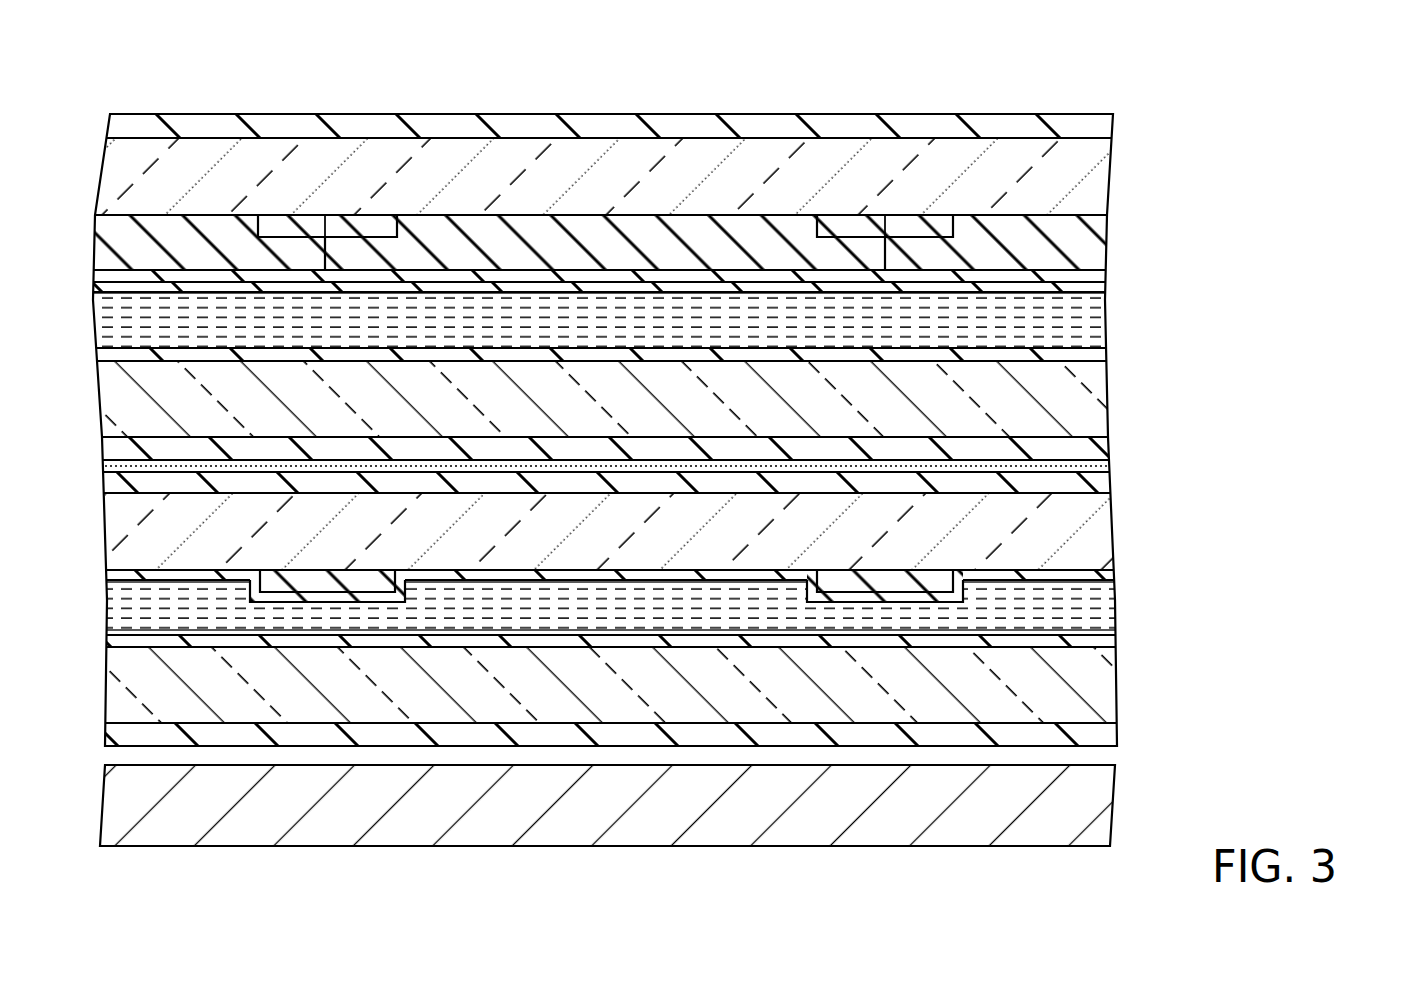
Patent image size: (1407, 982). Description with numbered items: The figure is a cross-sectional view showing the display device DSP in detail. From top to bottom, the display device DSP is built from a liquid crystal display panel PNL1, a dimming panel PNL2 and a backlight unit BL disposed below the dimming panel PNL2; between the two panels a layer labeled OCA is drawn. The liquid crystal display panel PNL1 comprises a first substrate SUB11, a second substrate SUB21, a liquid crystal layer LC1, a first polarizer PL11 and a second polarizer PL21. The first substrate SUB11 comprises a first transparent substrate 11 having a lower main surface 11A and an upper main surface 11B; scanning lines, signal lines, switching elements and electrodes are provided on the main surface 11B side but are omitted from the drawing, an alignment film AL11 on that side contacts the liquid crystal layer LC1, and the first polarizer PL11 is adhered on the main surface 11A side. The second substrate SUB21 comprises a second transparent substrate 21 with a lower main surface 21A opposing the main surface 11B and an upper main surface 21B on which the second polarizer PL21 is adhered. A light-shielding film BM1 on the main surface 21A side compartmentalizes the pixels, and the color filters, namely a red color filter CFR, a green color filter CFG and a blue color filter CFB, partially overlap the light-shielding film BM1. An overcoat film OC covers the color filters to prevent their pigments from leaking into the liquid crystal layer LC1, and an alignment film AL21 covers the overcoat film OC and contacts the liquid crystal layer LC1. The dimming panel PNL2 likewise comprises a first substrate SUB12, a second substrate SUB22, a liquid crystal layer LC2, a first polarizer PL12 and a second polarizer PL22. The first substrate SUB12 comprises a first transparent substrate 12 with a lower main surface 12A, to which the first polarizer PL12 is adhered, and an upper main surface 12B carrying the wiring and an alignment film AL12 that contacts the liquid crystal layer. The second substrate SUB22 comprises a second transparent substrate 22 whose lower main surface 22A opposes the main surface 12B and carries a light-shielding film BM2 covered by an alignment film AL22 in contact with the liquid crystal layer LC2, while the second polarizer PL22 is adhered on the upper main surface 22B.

The display device DSP is at (742, 461).
The liquid crystal display panel PNL1 is at (742, 257).
The dimming panel PNL2 is at (742, 679).
The second polarizer PL21 is at (1105, 125).
The first polarizer PL11 is at (1102, 451).
The second polarizer PL22 is at (1104, 484).
The first polarizer PL12 is at (1108, 741).
The second substrate SUB21 is at (698, 176).
The first substrate SUB11 is at (698, 245).
The second substrate SUB22 is at (698, 691).
The first substrate SUB12 is at (698, 762).
The second transparent substrate 21 is at (633, 134).
The main surface 21A is at (743, 205).
The main surface 21B is at (777, 148).
The first transparent substrate 11 is at (633, 245).
The main surface 11A is at (520, 428).
The main surface 11B is at (569, 370).
The second transparent substrate 22 is at (633, 691).
The main surface 22A is at (671, 552).
The main surface 22B is at (735, 502).
The first transparent substrate 12 is at (633, 768).
The main surface 12A is at (501, 708).
The main surface 12B is at (560, 658).
The red color filter CFR is at (160, 250).
The green color filter CFG is at (675, 250).
The blue color filter CFB is at (990, 250).
The light-shielding film BM1 is at (870, 230).
The light-shielding film BM2 is at (848, 582).
The overcoat film OC is at (1102, 279).
The alignment film AL21 is at (1102, 288).
The alignment film AL11 is at (1102, 353).
The alignment film AL22 is at (1106, 576).
The alignment film AL12 is at (1106, 641).
The liquid crystal layer LC1 is at (1102, 318).
The liquid crystal layer LC2 is at (1106, 605).
The optically clear adhesive layer OCA is at (1106, 466).
The backlight unit BL is at (1105, 805).